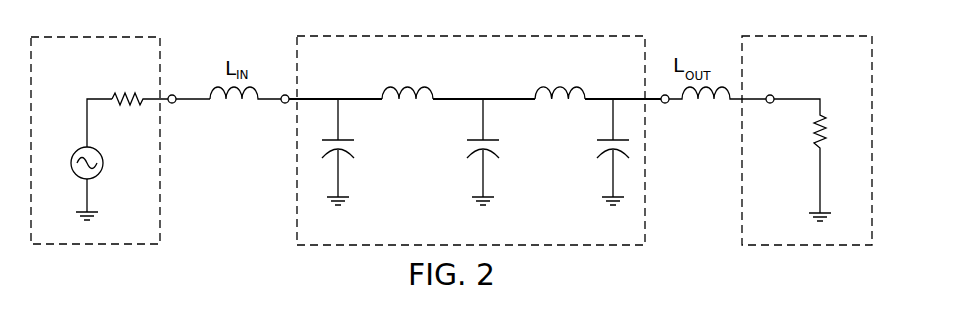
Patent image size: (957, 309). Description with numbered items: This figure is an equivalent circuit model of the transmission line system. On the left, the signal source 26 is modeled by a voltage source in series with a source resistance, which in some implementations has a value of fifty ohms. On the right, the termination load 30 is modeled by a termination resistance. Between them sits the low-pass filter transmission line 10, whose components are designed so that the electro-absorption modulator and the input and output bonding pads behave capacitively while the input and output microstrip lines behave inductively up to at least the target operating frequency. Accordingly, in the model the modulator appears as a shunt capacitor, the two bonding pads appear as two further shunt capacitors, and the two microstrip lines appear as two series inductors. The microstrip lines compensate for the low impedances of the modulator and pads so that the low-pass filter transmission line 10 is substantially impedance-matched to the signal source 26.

The signal source 26 is at (102, 17).
The low-pass filter transmission line 10 is at (548, 33).
The termination load 30 is at (812, 17).